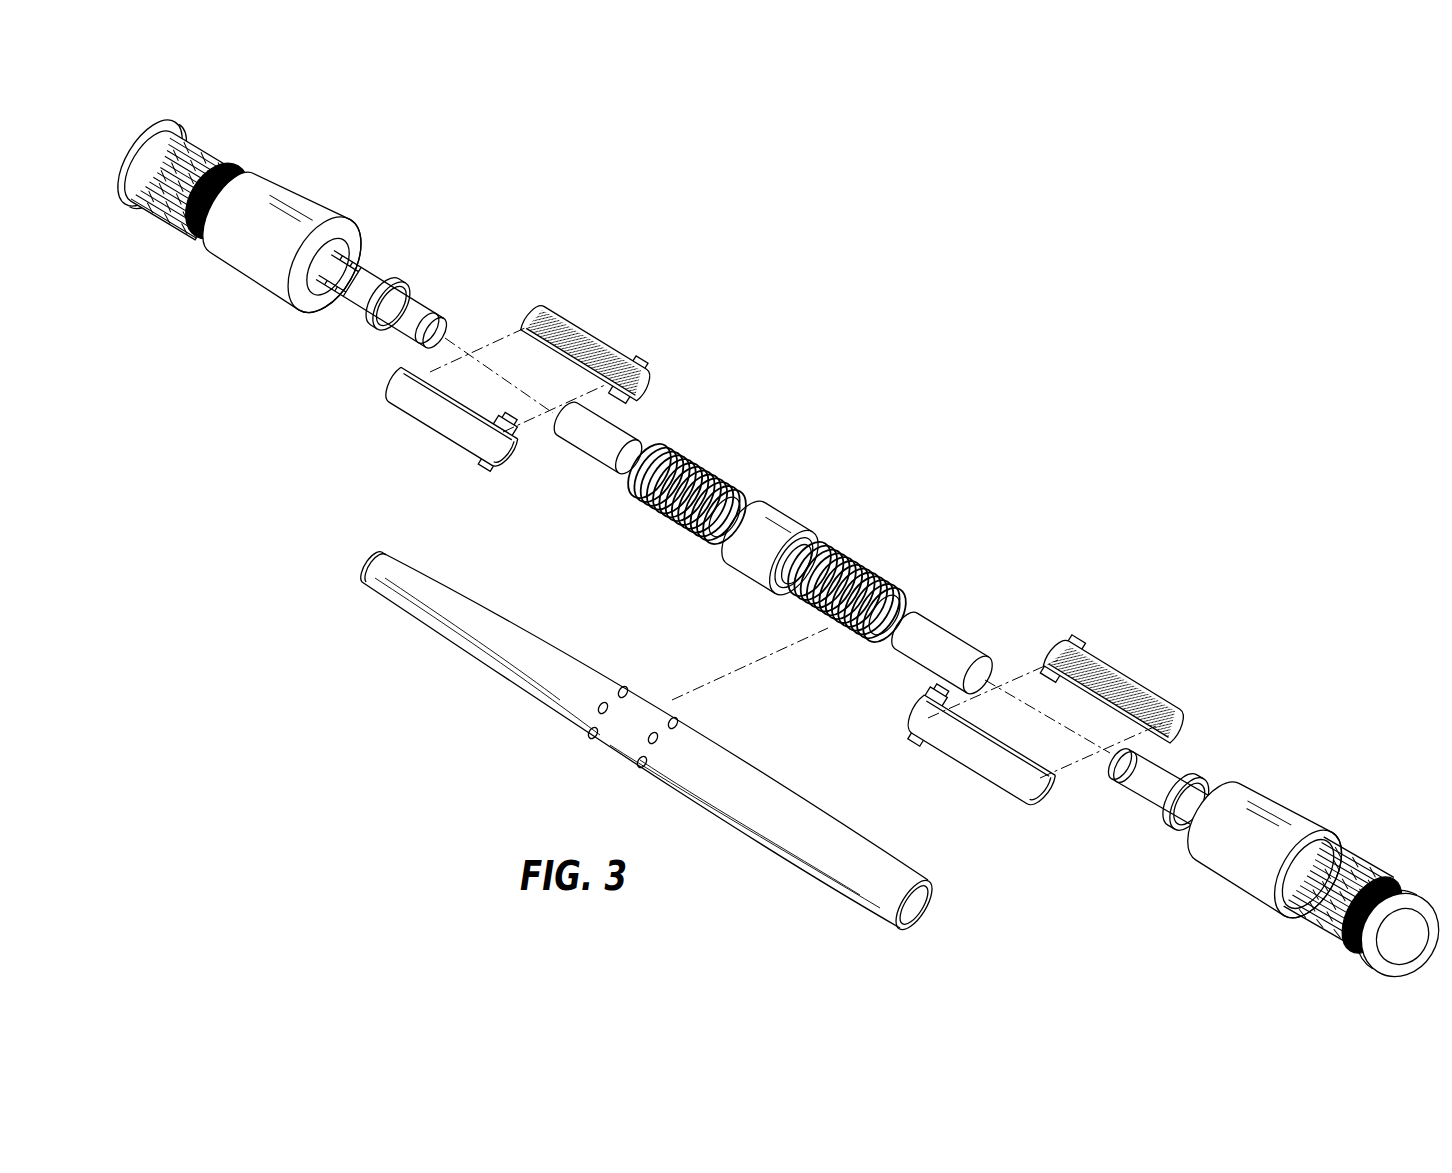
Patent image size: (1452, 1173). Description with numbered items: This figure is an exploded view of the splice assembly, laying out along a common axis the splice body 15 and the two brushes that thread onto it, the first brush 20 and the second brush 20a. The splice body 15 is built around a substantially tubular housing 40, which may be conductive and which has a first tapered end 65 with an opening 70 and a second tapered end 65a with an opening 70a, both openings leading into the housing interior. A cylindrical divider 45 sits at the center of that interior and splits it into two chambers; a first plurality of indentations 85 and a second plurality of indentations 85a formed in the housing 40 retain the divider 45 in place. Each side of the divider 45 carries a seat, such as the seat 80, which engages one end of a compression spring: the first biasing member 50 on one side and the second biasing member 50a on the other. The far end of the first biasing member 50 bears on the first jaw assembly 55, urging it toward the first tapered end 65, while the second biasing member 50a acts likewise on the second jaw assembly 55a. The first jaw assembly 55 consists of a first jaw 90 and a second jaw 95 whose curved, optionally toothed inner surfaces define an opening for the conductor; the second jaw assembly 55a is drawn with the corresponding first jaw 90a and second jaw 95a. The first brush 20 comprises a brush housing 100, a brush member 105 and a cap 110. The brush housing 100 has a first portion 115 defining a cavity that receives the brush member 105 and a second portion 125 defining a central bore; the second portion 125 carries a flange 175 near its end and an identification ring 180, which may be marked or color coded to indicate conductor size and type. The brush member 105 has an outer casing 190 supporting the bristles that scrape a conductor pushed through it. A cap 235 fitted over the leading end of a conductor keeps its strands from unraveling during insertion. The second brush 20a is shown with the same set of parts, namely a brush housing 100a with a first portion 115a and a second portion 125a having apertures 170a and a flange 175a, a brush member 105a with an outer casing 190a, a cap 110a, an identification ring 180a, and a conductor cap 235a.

The splice body 15 is at (887, 366).
The first brush 20 is at (1268, 758).
The second brush 20a is at (341, 165).
The housing 40 is at (777, 830).
The divider 45 is at (770, 520).
The first biasing member 50 is at (850, 573).
The second biasing member 50a is at (695, 460).
The first jaw assembly 55 is at (1018, 660).
The second jaw assembly 55a is at (538, 455).
The first tapered end 65 is at (863, 877).
The second tapered end 65a is at (410, 600).
The opening 70 is at (912, 907).
The opening 70a is at (365, 563).
The seat 80 is at (797, 537).
The first plurality of indentations 85 is at (645, 763).
The second plurality of indentations 85a is at (598, 714).
The first jaw 90 is at (1086, 656).
The threaded half shell 90a is at (568, 332).
The second jaw 95 is at (990, 757).
The half shell 95a is at (450, 413).
The brush housing 100 is at (1160, 903).
The plunger assembly 100a is at (245, 308).
The brush member 105 is at (1365, 845).
The cap assembly 105a is at (233, 123).
The cap 110 is at (1420, 900).
The end ring 110a is at (168, 122).
The first portion 115 is at (1247, 880).
The cylinder body 115a is at (340, 213).
The second portion 125 is at (1157, 787).
The pin 125a is at (437, 305).
The stem 170a is at (335, 247).
The flange 175 is at (1117, 777).
The pin tip 175a is at (420, 330).
The identification ring 180 is at (1202, 780).
The flange 180a is at (392, 283).
The outer casing 190 is at (1330, 947).
The knurled grip 190a is at (205, 152).
The cap 235 is at (933, 640).
The pin 235a is at (620, 430).